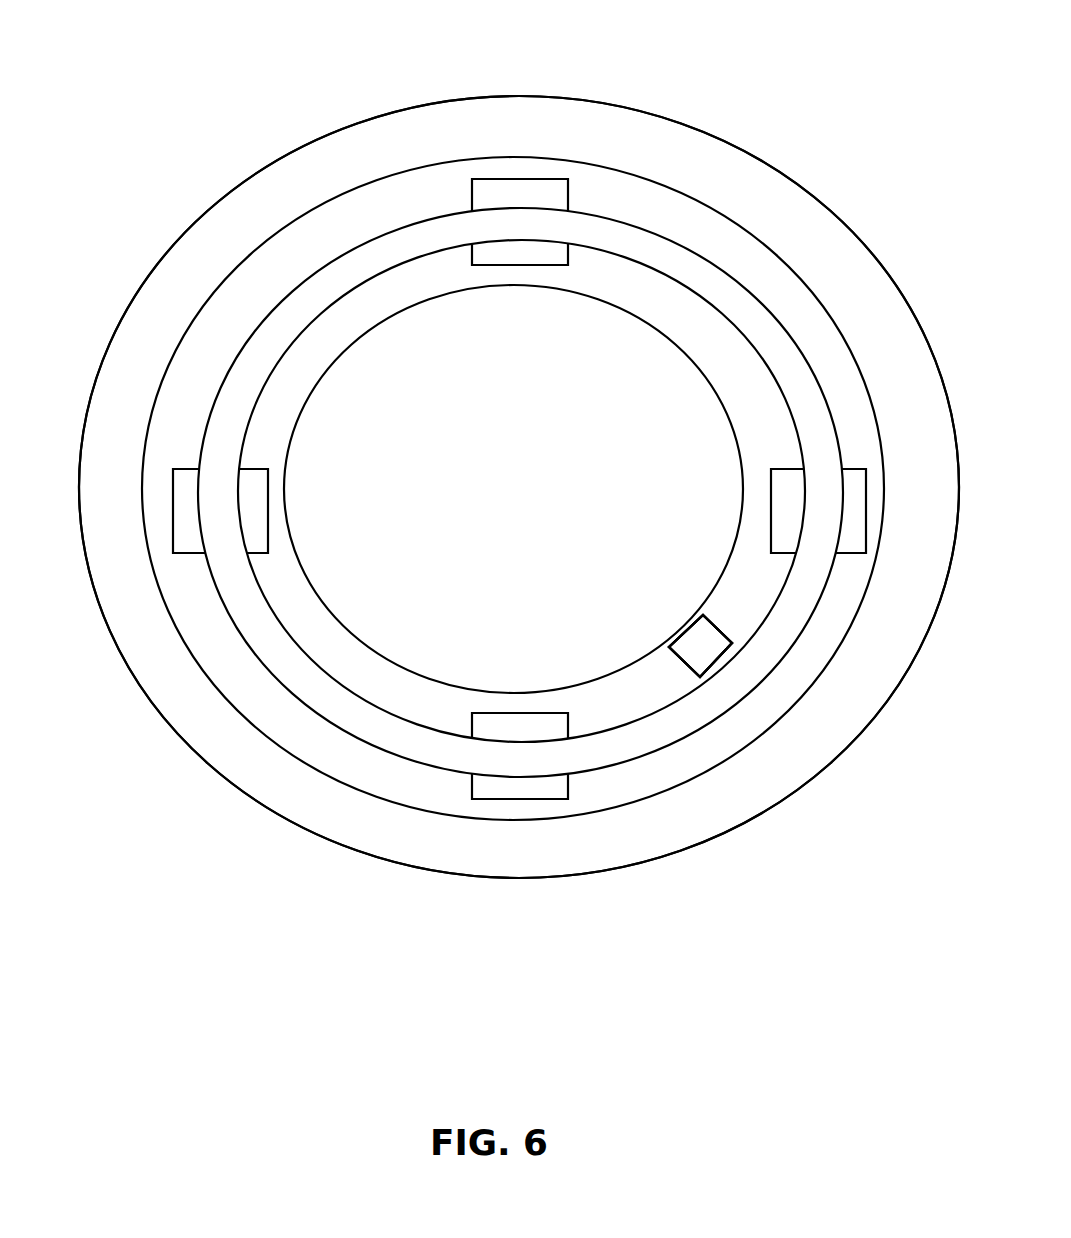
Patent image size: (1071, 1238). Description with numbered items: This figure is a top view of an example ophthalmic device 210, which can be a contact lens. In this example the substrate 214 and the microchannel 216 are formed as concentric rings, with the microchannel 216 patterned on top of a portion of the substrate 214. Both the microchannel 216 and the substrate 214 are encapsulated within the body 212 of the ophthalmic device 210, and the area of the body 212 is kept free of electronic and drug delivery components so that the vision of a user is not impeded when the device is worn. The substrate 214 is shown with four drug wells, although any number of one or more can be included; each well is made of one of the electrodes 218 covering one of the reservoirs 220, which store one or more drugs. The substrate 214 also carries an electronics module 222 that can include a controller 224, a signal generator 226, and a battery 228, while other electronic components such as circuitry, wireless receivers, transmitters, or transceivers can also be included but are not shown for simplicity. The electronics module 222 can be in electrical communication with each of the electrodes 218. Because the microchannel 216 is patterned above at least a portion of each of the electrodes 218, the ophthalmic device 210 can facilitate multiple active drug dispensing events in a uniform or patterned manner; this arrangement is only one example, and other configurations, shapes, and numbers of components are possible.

The ophthalmic device 210 is at (273, 80).
The body 212 is at (802, 217).
The substrate 214 is at (332, 642).
The microchannel 216 is at (630, 238).
The electrodes 218 is at (519, 599).
The reservoirs 220 is at (487, 792).
The electronics module 222 is at (693, 655).
The controller 224 is at (781, 783).
The signal generator 226 is at (799, 796).
The battery 228 is at (770, 809).